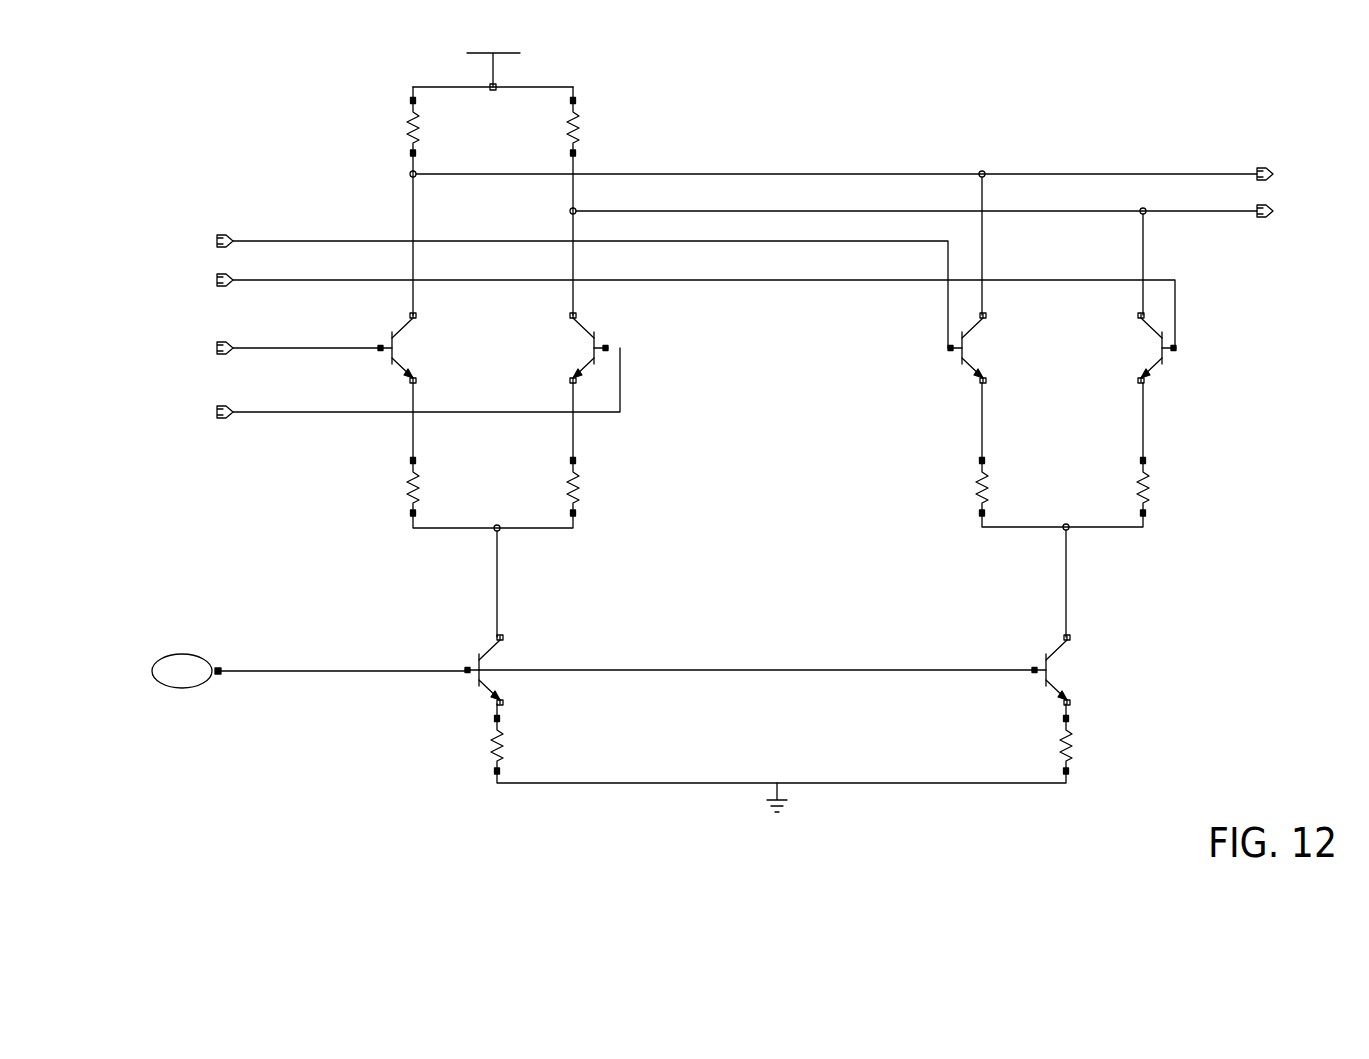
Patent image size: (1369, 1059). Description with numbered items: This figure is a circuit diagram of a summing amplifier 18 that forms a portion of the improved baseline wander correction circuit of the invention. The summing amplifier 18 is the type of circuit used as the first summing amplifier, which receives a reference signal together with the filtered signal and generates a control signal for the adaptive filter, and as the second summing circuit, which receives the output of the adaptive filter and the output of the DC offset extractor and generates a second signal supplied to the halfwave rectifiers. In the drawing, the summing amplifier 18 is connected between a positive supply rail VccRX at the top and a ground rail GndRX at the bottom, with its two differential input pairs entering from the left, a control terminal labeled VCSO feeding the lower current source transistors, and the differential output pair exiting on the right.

The summing amplifier 18 is at (731, 427).
The positive supply rail VccRX is at (492, 53).
The ground rail GndRX is at (788, 810).
The VCSO control input VCSO is at (186, 671).